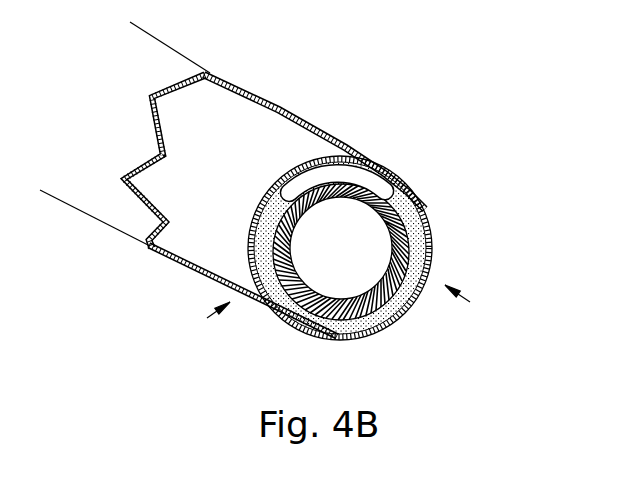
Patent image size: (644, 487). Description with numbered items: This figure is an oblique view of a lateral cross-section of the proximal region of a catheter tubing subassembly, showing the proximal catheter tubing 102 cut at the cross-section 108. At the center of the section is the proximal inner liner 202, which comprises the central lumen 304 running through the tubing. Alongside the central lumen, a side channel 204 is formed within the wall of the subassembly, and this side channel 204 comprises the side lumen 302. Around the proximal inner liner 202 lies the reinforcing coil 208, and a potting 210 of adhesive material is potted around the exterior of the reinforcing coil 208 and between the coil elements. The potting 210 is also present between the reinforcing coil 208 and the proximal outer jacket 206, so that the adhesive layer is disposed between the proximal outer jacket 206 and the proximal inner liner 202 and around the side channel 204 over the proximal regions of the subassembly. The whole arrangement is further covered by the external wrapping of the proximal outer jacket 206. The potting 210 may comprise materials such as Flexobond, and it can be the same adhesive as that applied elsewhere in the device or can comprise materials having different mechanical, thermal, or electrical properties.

The proximal catheter tubing 102 is at (470, 302).
The cross-section 108 is at (207, 318).
The proximal inner liner 202 is at (373, 325).
The side channel 204 is at (395, 168).
The proximal outer jacket 206 is at (150, 251).
The reinforcing coil 208 is at (250, 252).
The potting 210 is at (319, 155).
The side lumen 302 is at (345, 180).
The central lumen 304 is at (337, 250).